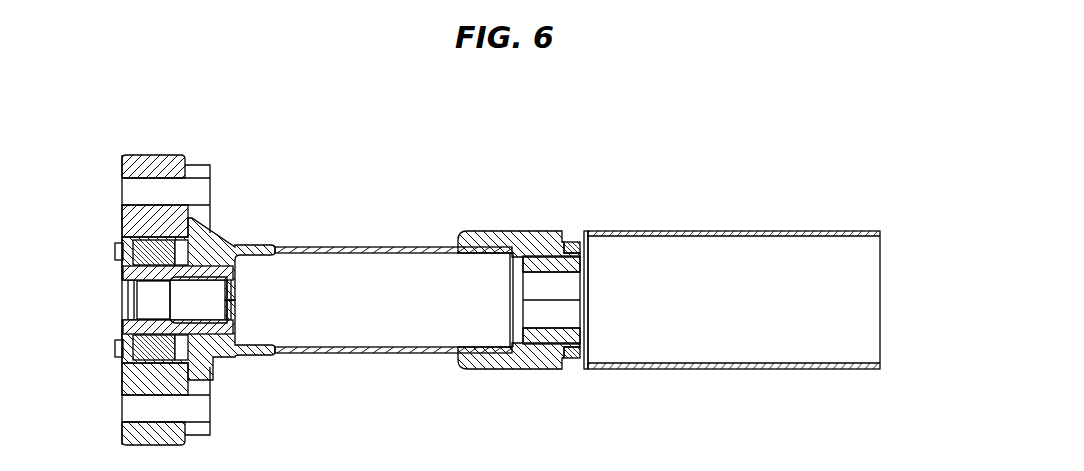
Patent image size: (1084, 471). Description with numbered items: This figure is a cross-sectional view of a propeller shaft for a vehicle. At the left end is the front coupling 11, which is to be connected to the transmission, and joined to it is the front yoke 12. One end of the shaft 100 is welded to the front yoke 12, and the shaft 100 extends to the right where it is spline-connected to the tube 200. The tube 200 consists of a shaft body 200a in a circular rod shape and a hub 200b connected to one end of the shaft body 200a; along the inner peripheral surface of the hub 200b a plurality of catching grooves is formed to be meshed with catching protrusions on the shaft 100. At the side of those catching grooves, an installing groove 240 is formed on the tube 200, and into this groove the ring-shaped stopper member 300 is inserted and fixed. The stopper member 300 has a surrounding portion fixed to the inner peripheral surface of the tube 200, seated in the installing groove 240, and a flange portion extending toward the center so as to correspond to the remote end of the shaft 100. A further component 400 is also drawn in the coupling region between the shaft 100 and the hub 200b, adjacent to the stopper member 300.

The front coupling 11 is at (167, 157).
The front yoke 12 is at (222, 235).
The shaft 100 is at (343, 356).
The tube 200 is at (667, 264).
The shaft body 200a is at (740, 231).
The hub 200b is at (497, 231).
The installing groove 240 is at (570, 242).
The stopper member 300 is at (574, 363).
The bushing 400 is at (534, 358).